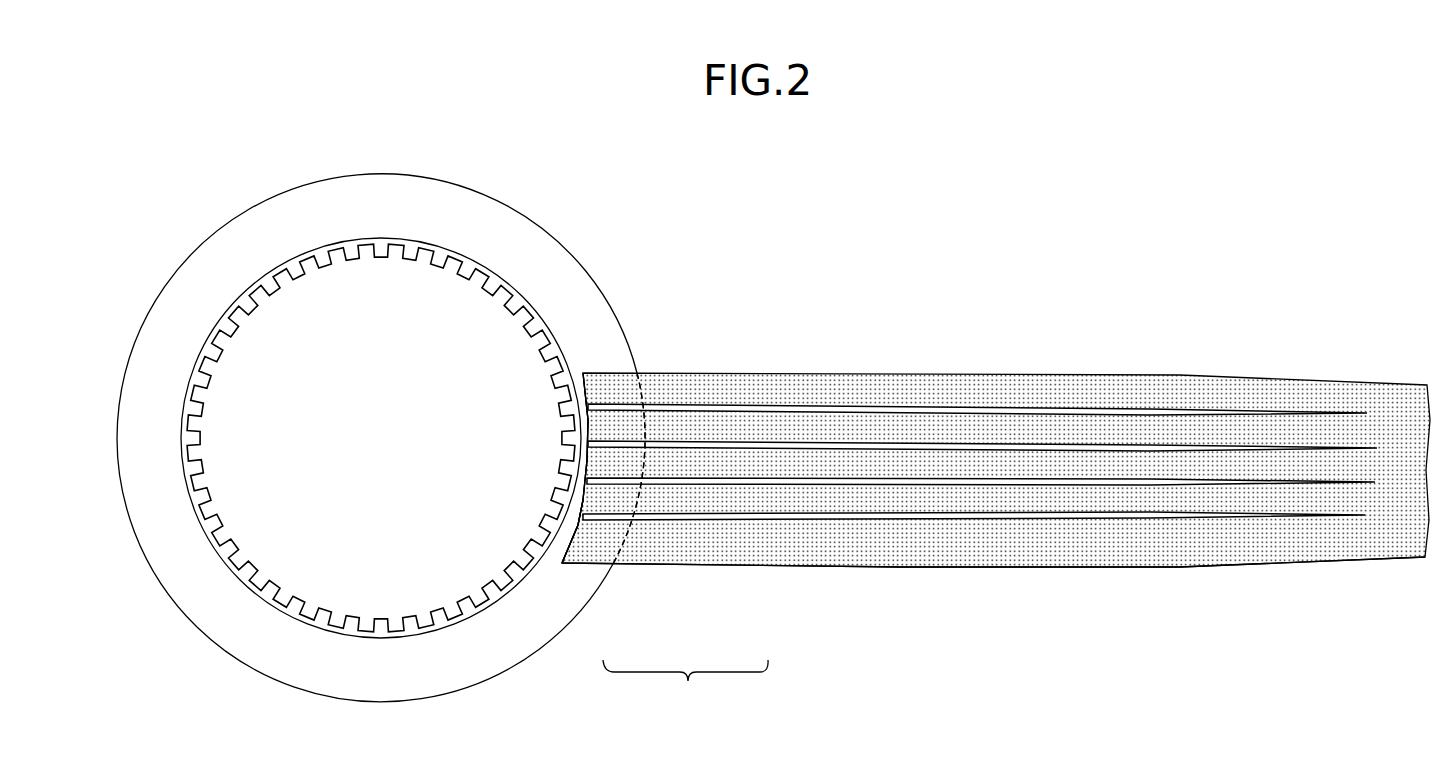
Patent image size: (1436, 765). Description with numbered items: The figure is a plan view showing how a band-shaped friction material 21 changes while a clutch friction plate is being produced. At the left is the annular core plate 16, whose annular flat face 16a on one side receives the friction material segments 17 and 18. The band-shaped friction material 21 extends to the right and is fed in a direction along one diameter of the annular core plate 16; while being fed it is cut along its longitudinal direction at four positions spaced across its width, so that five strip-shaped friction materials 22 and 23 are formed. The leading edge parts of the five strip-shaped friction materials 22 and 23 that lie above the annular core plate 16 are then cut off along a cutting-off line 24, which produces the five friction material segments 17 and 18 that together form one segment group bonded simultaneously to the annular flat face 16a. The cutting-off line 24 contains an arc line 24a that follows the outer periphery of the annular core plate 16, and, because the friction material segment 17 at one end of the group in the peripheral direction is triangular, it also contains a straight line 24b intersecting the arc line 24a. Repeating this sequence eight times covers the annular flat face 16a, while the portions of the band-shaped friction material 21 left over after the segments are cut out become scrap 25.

The annular core plate 16 is at (578, 262).
The annular flat face 16a is at (468, 249).
The friction material segment 17 is at (597, 530).
The friction material segment 18 is at (603, 420).
The band-shaped friction material 21 is at (1415, 392).
The strip-shaped friction material 22 is at (900, 547).
The strip-shaped friction material 23 is at (890, 425).
The cutting-off line 24 is at (665, 545).
The arc line 24a is at (643, 493).
The straight line 24b is at (580, 522).
The scrap 25 is at (580, 532).